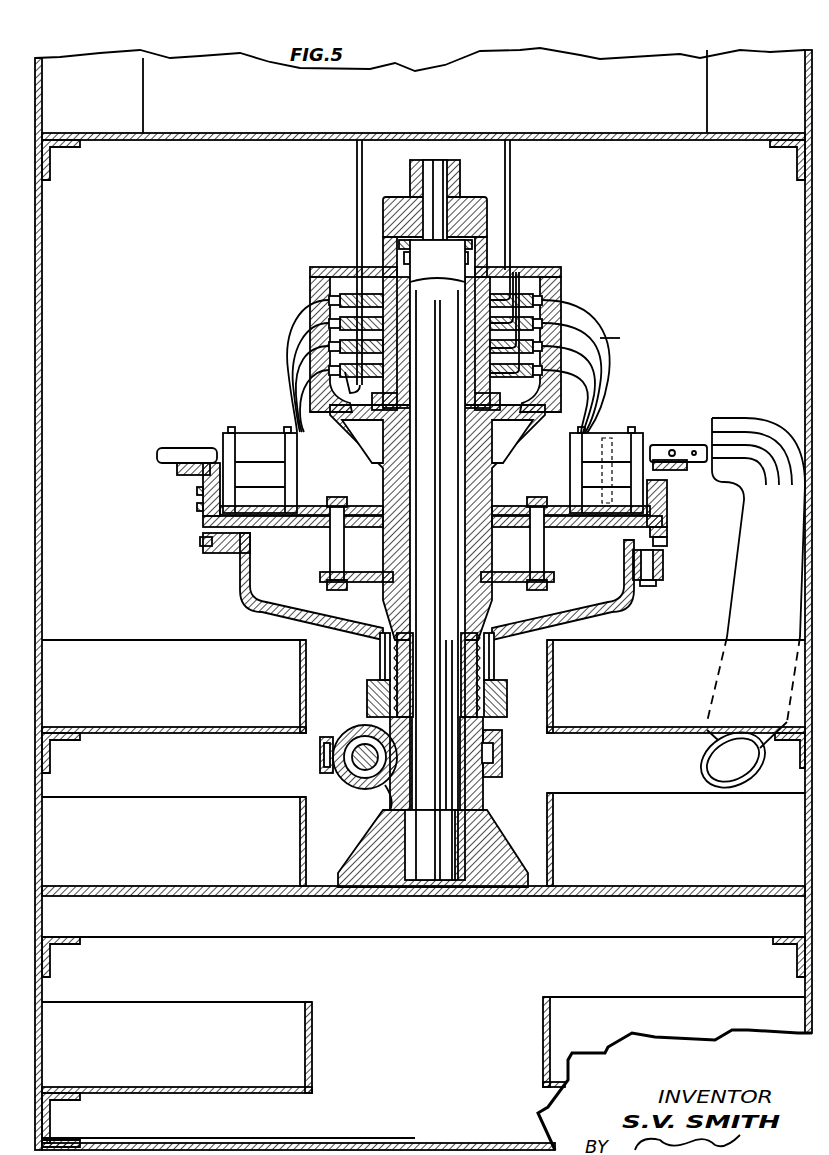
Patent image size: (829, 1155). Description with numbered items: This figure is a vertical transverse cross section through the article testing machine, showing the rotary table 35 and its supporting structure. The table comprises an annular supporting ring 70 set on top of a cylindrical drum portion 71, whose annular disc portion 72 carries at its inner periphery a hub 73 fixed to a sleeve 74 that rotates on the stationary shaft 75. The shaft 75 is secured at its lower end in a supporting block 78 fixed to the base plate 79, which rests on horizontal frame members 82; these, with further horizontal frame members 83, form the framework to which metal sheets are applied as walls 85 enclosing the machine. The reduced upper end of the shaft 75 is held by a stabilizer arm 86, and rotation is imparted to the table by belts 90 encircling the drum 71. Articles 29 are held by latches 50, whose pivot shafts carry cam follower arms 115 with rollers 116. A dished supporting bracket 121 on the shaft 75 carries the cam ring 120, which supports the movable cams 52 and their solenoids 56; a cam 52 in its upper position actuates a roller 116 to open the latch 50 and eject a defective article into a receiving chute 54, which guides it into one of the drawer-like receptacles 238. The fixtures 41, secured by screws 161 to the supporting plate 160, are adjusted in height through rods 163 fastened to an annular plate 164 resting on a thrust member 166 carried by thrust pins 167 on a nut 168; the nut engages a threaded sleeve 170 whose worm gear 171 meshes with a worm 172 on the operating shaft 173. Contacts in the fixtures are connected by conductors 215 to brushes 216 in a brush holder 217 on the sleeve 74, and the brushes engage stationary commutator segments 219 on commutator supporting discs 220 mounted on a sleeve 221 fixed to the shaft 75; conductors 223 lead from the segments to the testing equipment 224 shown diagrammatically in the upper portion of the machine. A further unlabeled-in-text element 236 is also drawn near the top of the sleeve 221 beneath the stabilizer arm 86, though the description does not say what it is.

The article 29 is at (175, 448).
The rotary table 35 is at (200, 520).
The fixture 41 is at (258, 430).
The latch 50 is at (157, 452).
The movable cam 52 is at (660, 555).
The receiving chute 54 is at (745, 420).
The solenoid 56 is at (648, 582).
The supporting ring 70 is at (185, 478).
The drum portion 71 is at (668, 520).
The disc portion 72 is at (604, 540).
The hub 73 is at (483, 490).
The sleeve 74 is at (467, 470).
The stationary shaft 75 is at (443, 452).
The supporting block 78 is at (500, 842).
The base plate 79 is at (258, 897).
The horizontal frame members 82 is at (58, 962).
The horizontal frame members 83 is at (62, 148).
The walls 85 is at (806, 214).
The stabilizer arm 86 is at (412, 162).
The belts 90 is at (196, 492).
The arm 115 is at (668, 532).
The roller 116 is at (200, 541).
The cam ring 120 is at (222, 553).
The supporting bracket 121 is at (258, 608).
The supporting plate 160 is at (315, 506).
The screws 161 is at (232, 428).
The rods 163 is at (330, 560).
The annular plate 164 is at (393, 580).
The thrust member 166 is at (517, 565).
The thrust pins 167 is at (380, 645).
The nut 168 is at (367, 686).
The threaded sleeve 170 is at (393, 662).
The worm gear 171 is at (494, 752).
The worm 172 is at (368, 770).
The operating shaft 173 is at (355, 762).
The conductors 215 is at (287, 338).
The brushes 216 is at (335, 290).
The brush holder 217 is at (329, 300).
The commutator segments 219 is at (542, 352).
The commutator supporting discs 220 is at (565, 295).
The sleeve 221 is at (489, 210).
The conductors 223 is at (355, 168).
The testing equipment 224 is at (250, 128).
The bearing 236 is at (393, 242).
The receptacles 238 is at (175, 720).